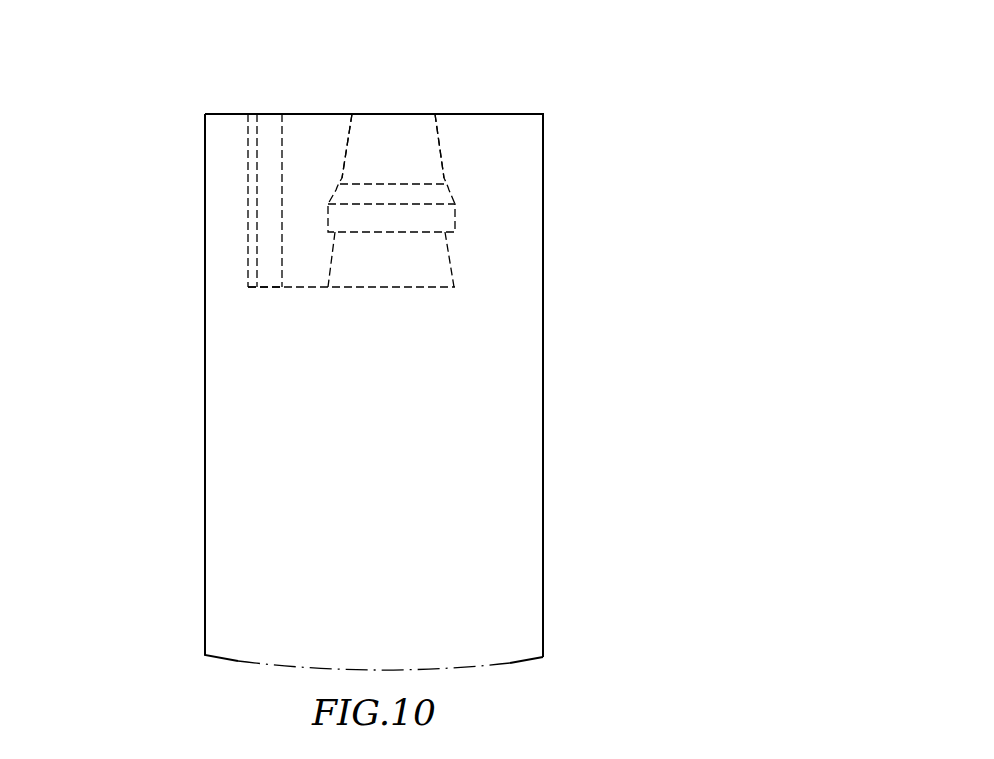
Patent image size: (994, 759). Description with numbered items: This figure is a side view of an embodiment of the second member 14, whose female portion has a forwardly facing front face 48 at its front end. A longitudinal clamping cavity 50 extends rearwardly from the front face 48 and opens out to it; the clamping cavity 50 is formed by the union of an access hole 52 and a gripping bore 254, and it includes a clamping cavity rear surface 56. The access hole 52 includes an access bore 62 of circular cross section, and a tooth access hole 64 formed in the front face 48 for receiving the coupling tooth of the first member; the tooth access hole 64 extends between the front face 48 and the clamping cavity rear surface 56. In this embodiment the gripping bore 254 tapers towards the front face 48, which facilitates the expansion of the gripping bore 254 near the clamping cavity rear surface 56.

The second member 14 is at (177, 383).
The front face 48 is at (507, 114).
The clamping cavity 50 is at (401, 95).
The access hole 52 is at (281, 94).
The clamping cavity rear surface 56 is at (432, 286).
The access bore 62 is at (322, 132).
The tooth access hole 64 is at (267, 126).
The gripping bore 254 is at (408, 138).